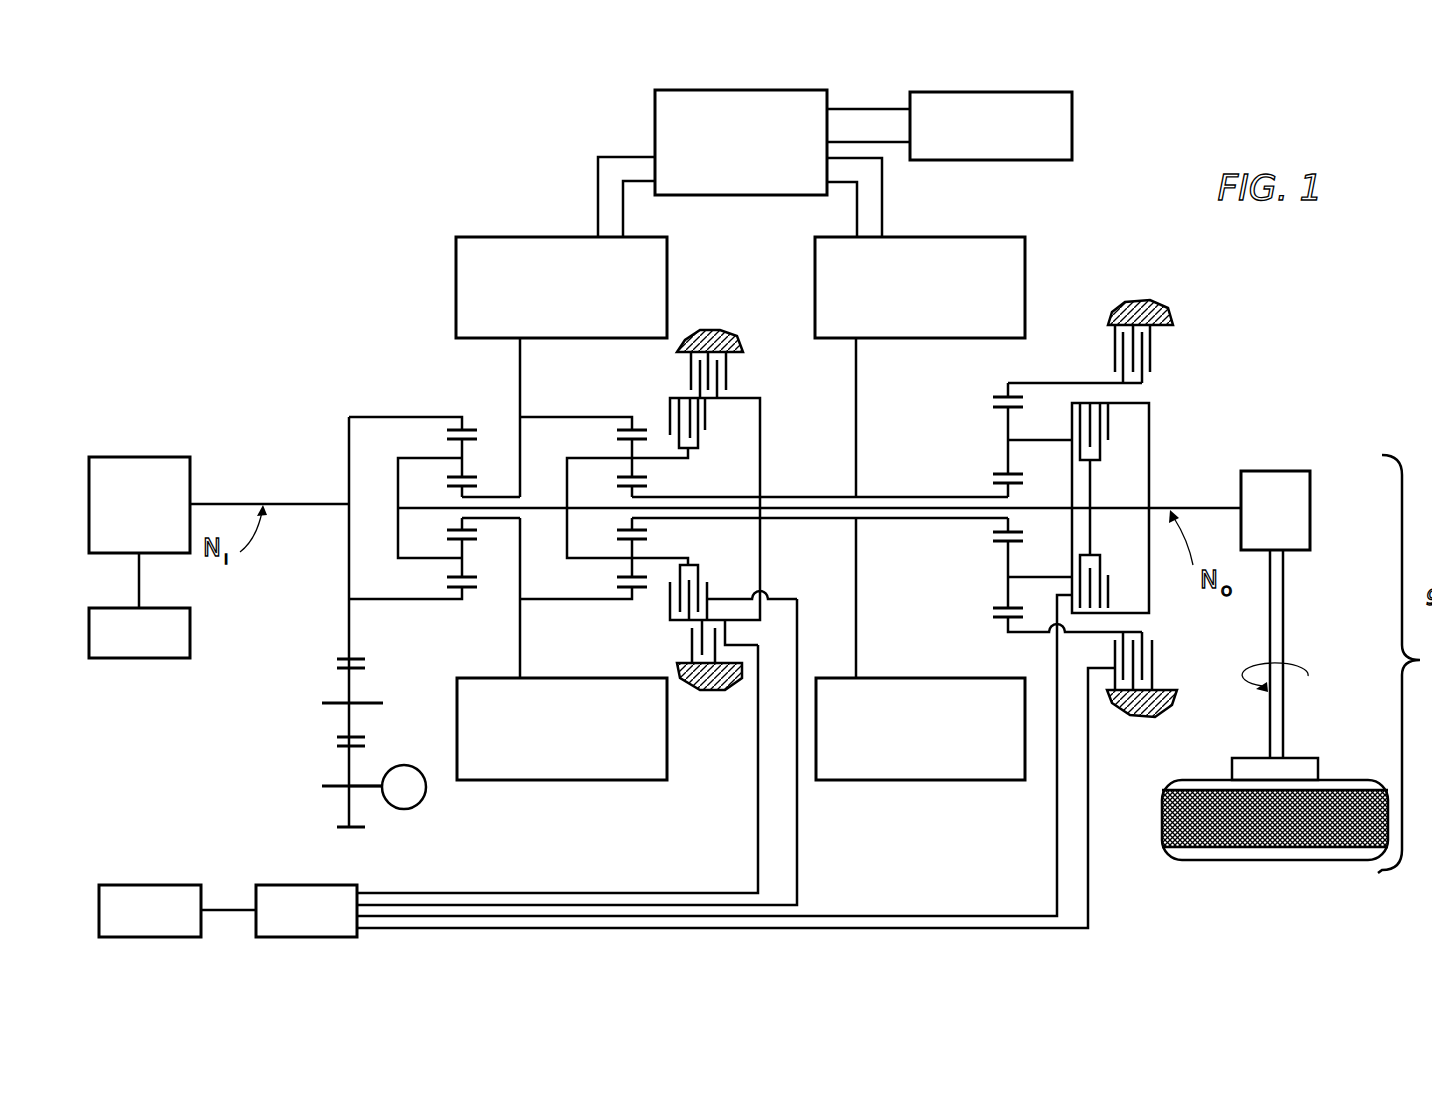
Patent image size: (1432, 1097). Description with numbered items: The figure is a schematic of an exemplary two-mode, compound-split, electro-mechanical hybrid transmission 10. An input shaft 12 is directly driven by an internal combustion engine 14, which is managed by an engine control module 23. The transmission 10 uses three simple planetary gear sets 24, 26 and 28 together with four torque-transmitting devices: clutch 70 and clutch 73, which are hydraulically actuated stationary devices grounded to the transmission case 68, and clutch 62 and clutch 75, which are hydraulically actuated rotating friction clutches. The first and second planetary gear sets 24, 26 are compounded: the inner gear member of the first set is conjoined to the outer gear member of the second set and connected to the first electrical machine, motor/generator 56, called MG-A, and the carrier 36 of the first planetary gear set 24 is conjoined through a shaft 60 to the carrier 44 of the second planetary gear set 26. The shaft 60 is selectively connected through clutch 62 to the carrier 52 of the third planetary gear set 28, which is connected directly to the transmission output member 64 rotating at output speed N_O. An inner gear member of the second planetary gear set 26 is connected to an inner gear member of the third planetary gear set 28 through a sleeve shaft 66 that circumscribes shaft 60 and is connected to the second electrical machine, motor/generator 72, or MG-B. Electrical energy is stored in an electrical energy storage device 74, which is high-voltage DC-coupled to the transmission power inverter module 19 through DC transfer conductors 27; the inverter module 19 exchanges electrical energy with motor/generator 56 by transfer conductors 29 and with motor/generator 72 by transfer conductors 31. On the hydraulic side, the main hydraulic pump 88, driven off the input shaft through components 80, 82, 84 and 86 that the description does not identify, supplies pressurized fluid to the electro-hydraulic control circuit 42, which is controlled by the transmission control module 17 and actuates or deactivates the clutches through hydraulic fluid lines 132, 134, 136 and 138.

The transmission 10 is at (410, 192).
The input shaft 12 is at (307, 503).
The internal combustion engine 14 is at (145, 457).
The transmission control module 17 is at (138, 885).
The transmission power inverter module 19 is at (655, 108).
The engine control module 23 is at (190, 651).
The first planetary gear set 24 is at (449, 408).
The second planetary gear set 26 is at (624, 408).
The DC transfer conductors 27 is at (845, 109).
The third planetary gear set 28 is at (996, 384).
The transfer conductors 29 is at (598, 195).
The transfer conductors 31 is at (882, 190).
The carrier of first planetary gear set 36 is at (398, 528).
The electro-hydraulic control system 42 is at (270, 885).
The carrier of second planetary gear set 44 is at (567, 537).
The carrier of third planetary gear set 52 is at (1150, 410).
The motor/generator MG-A 56 is at (456, 272).
The shaft 60 is at (825, 508).
The clutch C2 62 is at (1126, 450).
The transmission output member 64 is at (1208, 505).
The sleeve shaft 66 is at (797, 497).
The transmission case 68 is at (705, 332).
The clutch C1 70 is at (1104, 345).
The motor/generator MG-B 72 is at (1030, 255).
The clutch C3 73 is at (735, 374).
The electrical energy storage device 74 is at (1075, 115).
The clutch C4 75 is at (716, 434).
The shaft to hydraulic pump 80 is at (349, 558).
The gear 82 is at (347, 693).
The gear 84 is at (345, 810).
The pump drive shaft 86 is at (372, 790).
The main hydraulic pump 88 is at (418, 805).
The hydraulic fluid line 132 is at (1092, 890).
The hydraulic fluid line 134 is at (1055, 848).
The hydraulic fluid line 136 is at (748, 865).
The hydraulic fluid line 138 is at (806, 865).